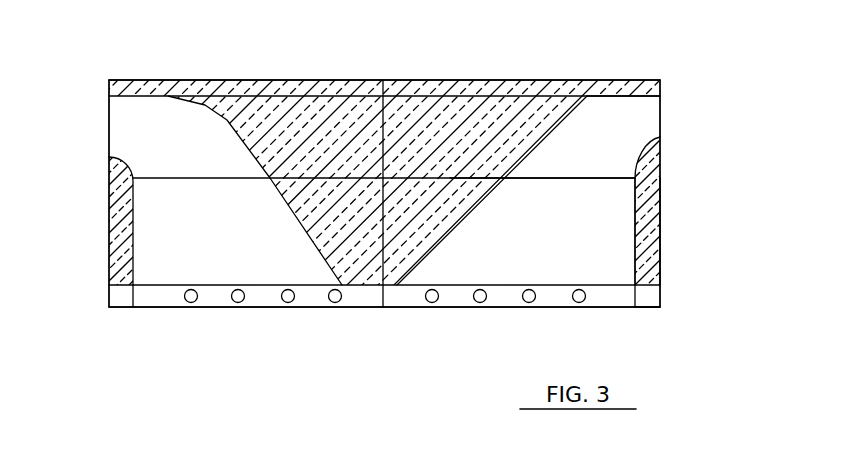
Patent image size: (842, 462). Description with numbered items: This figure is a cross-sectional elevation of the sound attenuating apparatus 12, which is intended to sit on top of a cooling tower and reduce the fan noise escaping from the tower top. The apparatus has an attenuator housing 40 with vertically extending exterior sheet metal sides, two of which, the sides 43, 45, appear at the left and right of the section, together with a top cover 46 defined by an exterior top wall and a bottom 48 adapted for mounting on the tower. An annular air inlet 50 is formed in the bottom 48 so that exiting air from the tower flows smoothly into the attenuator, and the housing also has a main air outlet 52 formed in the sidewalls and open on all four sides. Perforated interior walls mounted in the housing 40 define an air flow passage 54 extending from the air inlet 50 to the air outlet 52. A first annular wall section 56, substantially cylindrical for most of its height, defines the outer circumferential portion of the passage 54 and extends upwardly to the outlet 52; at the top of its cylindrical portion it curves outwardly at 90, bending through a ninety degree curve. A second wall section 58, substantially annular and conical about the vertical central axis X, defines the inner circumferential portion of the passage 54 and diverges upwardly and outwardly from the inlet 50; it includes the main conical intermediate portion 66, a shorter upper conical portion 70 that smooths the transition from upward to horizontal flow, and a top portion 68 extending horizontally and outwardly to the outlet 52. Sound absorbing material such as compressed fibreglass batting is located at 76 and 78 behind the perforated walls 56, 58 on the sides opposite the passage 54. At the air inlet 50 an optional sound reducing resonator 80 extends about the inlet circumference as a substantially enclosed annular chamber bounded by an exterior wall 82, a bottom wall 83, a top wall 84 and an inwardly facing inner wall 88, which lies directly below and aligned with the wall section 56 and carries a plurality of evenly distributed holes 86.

The sound attenuating apparatus 12 is at (695, 68).
The sound absorbing material 76 is at (283, 88).
The top cover 46 is at (358, 79).
The central axis X is at (383, 127).
The top portion 68 is at (618, 80).
The air outlet 52 is at (110, 135).
The upper conical portion 70 is at (537, 122).
The outwardly curving portion 90 is at (660, 137).
The sound absorbing material 78 is at (117, 214).
The intermediate portion 66 is at (487, 190).
The attenuator housing 40 is at (660, 212).
The air flow passage 54 is at (589, 235).
The side 43 is at (110, 263).
The sound reducing resonator 80 is at (210, 287).
The second wall section 58 is at (458, 228).
The first annular wall section 56 is at (660, 237).
The side 45 is at (660, 261).
The top wall 84 is at (127, 287).
The exterior wall 82 is at (660, 292).
The holes 86 is at (192, 303).
The inner wall 88 is at (450, 300).
The annular air inlet 50 is at (508, 308).
The bottom 48 is at (572, 308).
The bottom wall 83 is at (648, 310).